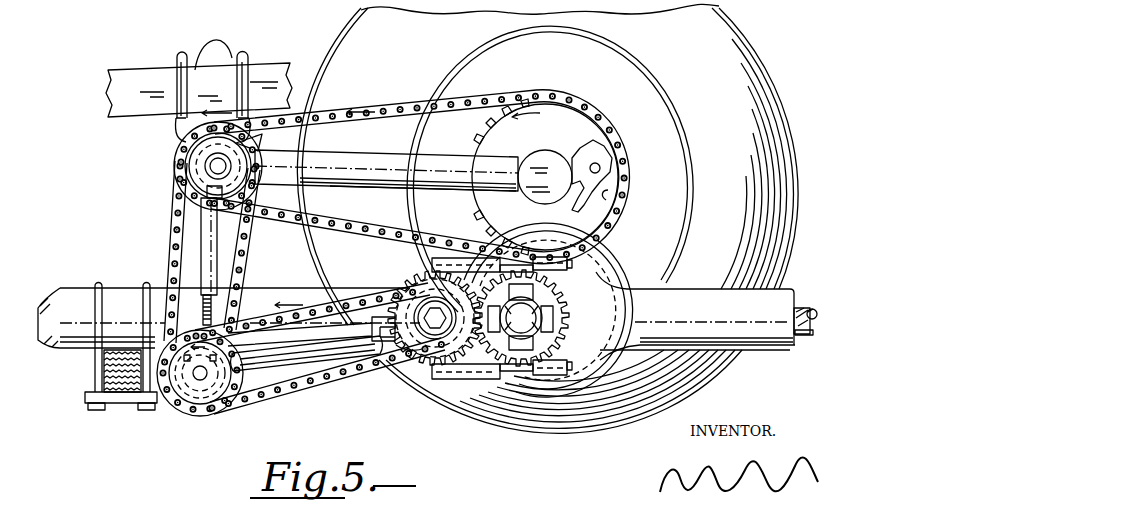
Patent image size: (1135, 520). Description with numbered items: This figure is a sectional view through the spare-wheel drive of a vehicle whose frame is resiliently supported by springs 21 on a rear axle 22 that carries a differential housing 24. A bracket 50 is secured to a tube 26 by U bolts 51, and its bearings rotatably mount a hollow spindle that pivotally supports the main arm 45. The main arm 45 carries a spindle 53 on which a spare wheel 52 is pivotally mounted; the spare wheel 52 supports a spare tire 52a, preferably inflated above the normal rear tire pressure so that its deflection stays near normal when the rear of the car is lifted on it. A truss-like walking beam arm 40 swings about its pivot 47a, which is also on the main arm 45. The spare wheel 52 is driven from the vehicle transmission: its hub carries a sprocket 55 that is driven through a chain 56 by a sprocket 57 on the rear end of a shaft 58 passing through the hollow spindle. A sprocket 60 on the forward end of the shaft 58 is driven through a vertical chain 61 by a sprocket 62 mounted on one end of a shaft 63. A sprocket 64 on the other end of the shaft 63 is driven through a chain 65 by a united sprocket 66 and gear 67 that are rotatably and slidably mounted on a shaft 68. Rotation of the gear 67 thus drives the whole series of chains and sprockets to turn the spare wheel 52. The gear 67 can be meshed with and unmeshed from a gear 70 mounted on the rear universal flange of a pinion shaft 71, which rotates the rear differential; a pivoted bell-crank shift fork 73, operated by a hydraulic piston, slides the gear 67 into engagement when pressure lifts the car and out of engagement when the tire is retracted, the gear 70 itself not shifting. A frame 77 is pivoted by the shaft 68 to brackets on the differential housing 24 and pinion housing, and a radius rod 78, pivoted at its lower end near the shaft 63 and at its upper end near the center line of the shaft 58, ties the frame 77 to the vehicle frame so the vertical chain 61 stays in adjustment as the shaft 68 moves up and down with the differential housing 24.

The springs 21 is at (124, 390).
The rear axle 22 is at (766, 340).
The differential housing 24 is at (630, 324).
The tube 26 is at (118, 95).
The walking beam arm 40 is at (598, 140).
The main arm 45 is at (415, 170).
The pivot 47a is at (600, 172).
The bracket 50 is at (178, 129).
The U bolts 51 is at (203, 50).
The spare wheel 52 is at (658, 124).
The spare tire 52a is at (766, 36).
The spindle 53 is at (540, 160).
The sprocket 55 is at (610, 195).
The chain 56 is at (460, 101).
The sprocket 57 is at (191, 170).
The shaft 58 is at (244, 136).
The sprocket 60 is at (190, 153).
The vertical chain 61 is at (178, 233).
The sprocket 62 is at (176, 414).
The shaft 63 is at (200, 381).
The sprocket 64 is at (242, 398).
The chain 65 is at (308, 392).
The sprocket 66 is at (519, 320).
The gear 67 is at (413, 280).
The shaft 68 is at (444, 334).
The gear 70 is at (548, 304).
The pinion shaft 71 is at (540, 333).
The bell-crank shift fork 73 is at (295, 354).
The frame 77 is at (338, 333).
The radius rod 78 is at (200, 263).